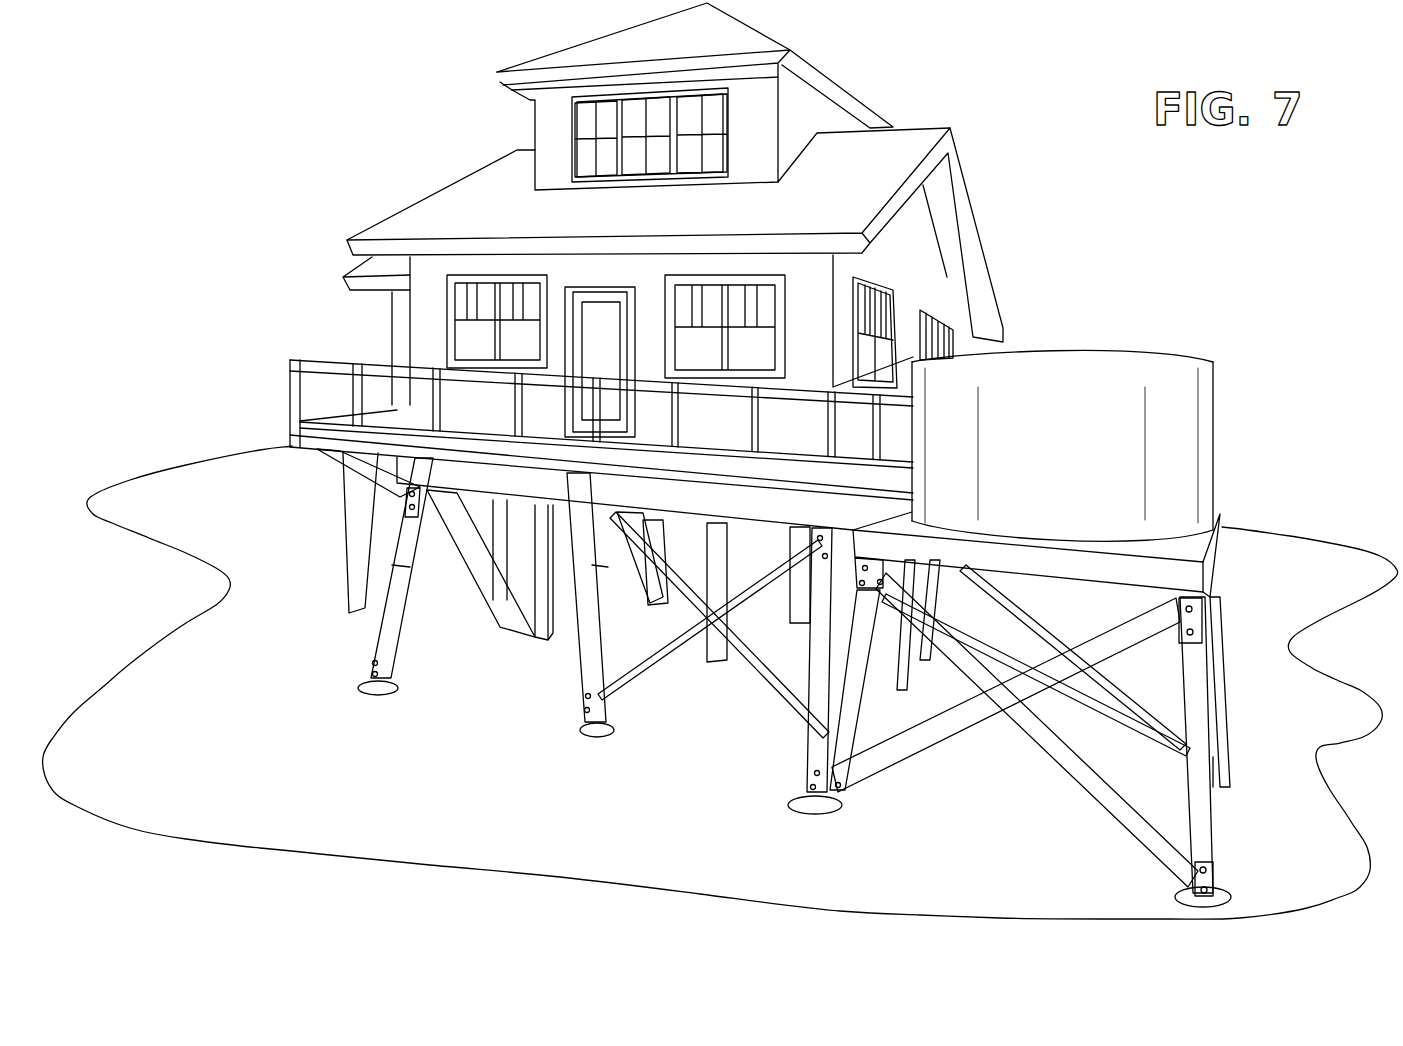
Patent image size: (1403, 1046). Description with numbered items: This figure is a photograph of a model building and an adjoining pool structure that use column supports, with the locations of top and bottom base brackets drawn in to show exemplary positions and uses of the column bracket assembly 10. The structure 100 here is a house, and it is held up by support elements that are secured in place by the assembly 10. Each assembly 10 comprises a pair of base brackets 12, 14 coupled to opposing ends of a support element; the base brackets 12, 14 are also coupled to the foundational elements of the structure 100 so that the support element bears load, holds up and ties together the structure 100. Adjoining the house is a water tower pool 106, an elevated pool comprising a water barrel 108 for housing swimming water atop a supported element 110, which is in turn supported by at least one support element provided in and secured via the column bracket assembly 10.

The structure 100 is at (739, 455).
The column bracket assembly 10 is at (382, 585).
The base bracket 12 is at (400, 493).
The base bracket 14 is at (353, 668).
The water tower pool 106 is at (1268, 590).
The water barrel 108 is at (1180, 422).
The supported element 110 is at (1195, 548).